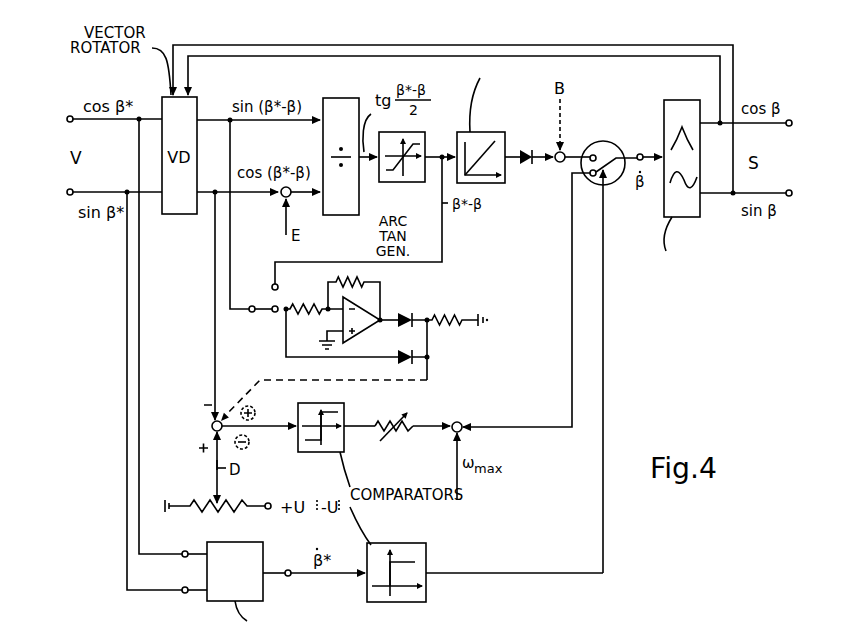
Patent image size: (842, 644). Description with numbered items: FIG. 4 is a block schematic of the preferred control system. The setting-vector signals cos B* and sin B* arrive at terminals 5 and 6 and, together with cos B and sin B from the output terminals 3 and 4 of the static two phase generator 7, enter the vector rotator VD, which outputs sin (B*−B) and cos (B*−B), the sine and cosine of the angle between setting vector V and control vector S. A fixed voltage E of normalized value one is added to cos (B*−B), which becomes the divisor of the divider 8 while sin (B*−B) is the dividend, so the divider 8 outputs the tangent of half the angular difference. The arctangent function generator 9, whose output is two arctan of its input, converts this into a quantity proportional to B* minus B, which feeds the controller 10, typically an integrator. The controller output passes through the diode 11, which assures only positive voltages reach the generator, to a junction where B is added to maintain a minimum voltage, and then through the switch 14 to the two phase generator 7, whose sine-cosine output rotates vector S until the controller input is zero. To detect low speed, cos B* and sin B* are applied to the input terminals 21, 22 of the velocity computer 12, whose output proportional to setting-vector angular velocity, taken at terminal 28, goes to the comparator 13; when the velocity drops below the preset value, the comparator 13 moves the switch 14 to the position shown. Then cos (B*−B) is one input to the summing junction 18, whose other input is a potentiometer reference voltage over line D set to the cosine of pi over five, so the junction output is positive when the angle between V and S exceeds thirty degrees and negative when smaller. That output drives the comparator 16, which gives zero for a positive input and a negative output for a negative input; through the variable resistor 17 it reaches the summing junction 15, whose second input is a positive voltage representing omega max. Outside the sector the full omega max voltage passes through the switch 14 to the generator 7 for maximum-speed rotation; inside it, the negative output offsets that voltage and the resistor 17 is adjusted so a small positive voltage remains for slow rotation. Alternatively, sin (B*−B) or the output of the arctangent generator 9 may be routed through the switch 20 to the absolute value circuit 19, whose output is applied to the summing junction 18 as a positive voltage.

The output terminal cos β 3 is at (789, 137).
The output terminal sin β 4 is at (789, 183).
The input terminal cos β* 5 is at (106, 119).
The input terminal sin β* 6 is at (106, 192).
The static two phase generator 7 is at (688, 100).
The divider 8 is at (340, 215).
The arctangent function generator 9 is at (393, 182).
The controller 10 is at (477, 132).
The diode 11 is at (531, 172).
The velocity computer 12 is at (275, 593).
The comparator 13 is at (394, 543).
The switch 14 is at (596, 141).
The summing junction 15 is at (461, 422).
The comparator 16 is at (313, 452).
The variable resistor 17 is at (393, 437).
The summing junction 18 is at (212, 426).
The absolute value circuit 19 is at (368, 313).
The switch 20 is at (264, 301).
The input terminal 21 is at (192, 542).
The input terminal 22 is at (192, 604).
The output terminal 28 is at (295, 586).